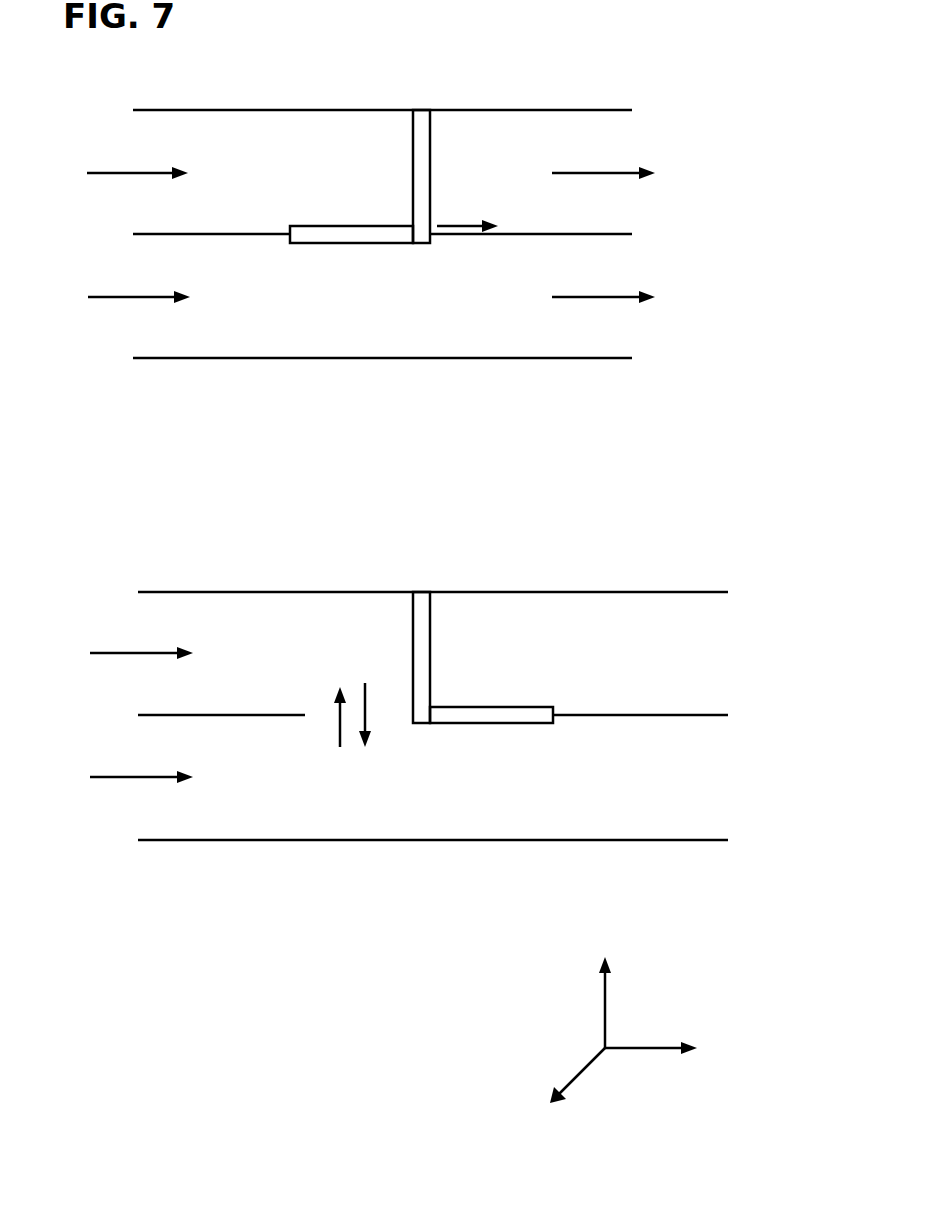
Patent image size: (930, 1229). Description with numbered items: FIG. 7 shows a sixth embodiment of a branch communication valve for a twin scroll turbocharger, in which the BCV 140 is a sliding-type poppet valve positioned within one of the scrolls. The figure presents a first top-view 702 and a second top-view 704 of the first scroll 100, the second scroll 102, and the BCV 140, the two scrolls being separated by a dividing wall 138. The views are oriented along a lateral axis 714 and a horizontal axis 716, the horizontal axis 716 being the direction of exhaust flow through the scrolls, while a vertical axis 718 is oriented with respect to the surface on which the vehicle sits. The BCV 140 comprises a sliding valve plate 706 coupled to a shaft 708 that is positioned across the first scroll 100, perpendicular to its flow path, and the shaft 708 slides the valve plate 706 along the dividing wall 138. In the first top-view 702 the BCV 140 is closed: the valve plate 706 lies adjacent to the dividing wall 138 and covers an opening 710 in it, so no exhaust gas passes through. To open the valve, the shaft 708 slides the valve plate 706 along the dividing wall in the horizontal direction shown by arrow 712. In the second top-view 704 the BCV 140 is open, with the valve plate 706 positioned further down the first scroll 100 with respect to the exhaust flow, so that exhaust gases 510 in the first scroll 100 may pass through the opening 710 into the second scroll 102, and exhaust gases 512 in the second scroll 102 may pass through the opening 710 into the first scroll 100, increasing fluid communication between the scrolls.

The first scroll 100 is at (182, 110).
The second scroll 102 is at (182, 360).
The dividing wall 138 is at (573, 233).
The BCV 140 is at (386, 275).
The exhaust gases 510 is at (103, 172).
The exhaust gases 512 is at (103, 295).
The first top-view 702 is at (618, 55).
The second top-view 704 is at (621, 536).
The sliding valve plate 706 is at (368, 226).
The shaft 708 is at (432, 188).
The opening 710 is at (388, 728).
The arrow 712 is at (460, 223).
The lateral axis 714 is at (605, 987).
The horizontal axis 716 is at (650, 1050).
The vertical axis 718 is at (578, 1078).